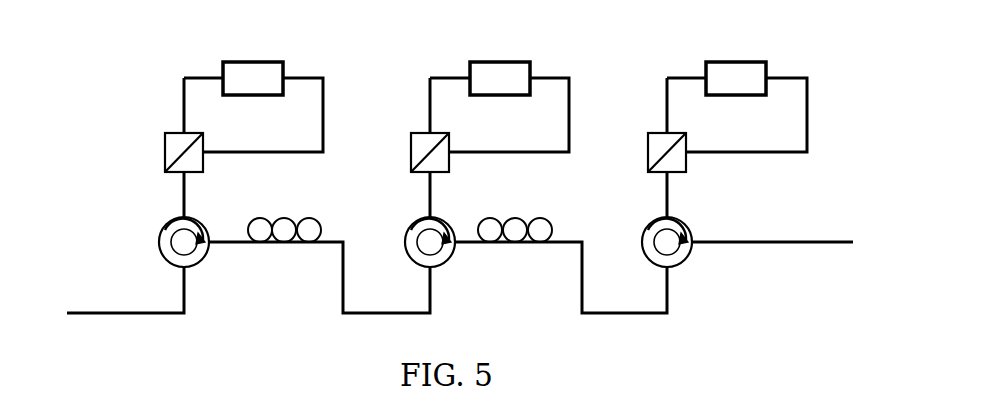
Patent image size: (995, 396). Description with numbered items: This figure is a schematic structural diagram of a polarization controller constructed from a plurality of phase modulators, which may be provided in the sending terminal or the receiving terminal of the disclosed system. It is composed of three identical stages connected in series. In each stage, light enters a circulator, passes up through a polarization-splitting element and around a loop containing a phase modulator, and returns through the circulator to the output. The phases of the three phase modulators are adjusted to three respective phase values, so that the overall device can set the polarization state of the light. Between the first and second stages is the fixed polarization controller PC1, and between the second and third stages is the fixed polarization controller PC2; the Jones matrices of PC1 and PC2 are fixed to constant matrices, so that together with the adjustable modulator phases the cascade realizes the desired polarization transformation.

The fixed polarization controller PC1 is at (284, 246).
The fixed polarization controller PC2 is at (515, 246).